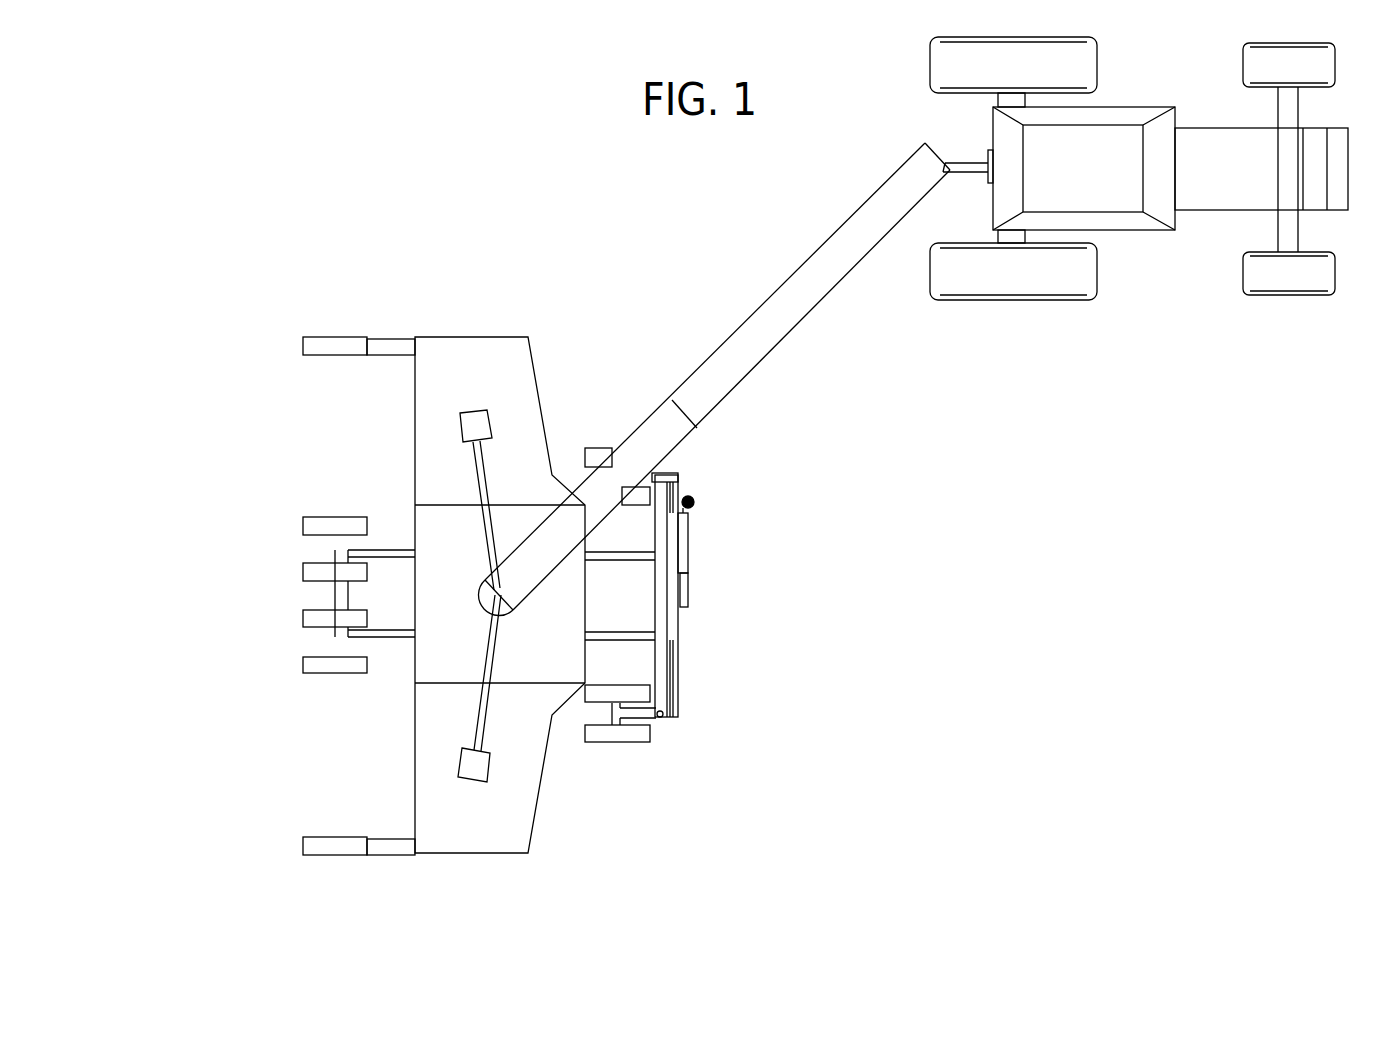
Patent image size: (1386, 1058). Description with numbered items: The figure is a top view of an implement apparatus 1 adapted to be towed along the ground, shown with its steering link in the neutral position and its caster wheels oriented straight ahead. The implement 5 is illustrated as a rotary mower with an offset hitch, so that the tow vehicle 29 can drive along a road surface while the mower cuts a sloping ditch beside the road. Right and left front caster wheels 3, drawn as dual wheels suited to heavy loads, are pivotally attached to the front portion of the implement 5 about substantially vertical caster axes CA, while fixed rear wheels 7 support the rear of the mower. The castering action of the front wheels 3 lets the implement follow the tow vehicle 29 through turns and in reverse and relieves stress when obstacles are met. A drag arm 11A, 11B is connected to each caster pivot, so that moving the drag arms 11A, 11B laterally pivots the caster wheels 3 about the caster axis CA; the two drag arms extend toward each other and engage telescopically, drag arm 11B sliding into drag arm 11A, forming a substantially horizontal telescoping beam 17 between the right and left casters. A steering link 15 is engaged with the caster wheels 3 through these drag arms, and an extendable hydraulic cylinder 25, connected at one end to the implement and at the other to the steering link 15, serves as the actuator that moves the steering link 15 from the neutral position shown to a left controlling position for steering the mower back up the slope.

The implement apparatus 1 is at (797, 642).
The front caster wheels 3 is at (595, 742).
The implement 5 is at (538, 388).
The fixed rear wheels 7 is at (303, 660).
The drag arm 11A is at (680, 668).
The drag arm 11B is at (678, 491).
The steering link 15 is at (678, 618).
The telescoping beam 17 is at (693, 504).
The hydraulic cylinder 25 is at (688, 549).
The tow vehicle 29 is at (992, 300).
The caster axis CA is at (667, 474).